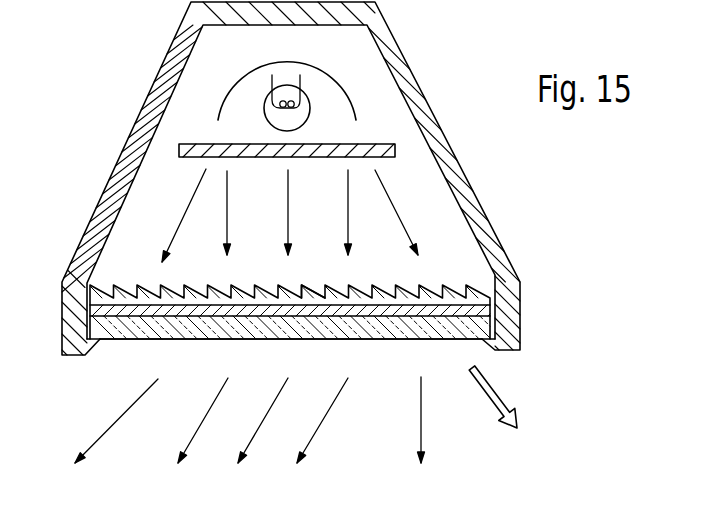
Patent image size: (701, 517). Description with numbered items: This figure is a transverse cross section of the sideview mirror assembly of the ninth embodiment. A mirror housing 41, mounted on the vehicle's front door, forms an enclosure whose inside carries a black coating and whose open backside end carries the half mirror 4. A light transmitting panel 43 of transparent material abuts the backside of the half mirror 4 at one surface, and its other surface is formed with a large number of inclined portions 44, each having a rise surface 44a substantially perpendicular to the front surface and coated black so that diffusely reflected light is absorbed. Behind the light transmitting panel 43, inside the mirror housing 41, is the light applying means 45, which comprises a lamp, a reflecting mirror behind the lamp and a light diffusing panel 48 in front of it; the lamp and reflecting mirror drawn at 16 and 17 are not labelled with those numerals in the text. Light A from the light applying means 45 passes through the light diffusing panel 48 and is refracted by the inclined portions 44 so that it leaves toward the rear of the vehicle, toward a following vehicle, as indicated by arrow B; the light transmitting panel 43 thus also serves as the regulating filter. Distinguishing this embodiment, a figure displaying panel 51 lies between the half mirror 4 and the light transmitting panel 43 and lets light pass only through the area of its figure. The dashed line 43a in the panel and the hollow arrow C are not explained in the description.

The half mirror 4 is at (377, 342).
The lamp 16 is at (311, 112).
The reflector 17 is at (330, 75).
The mirror housing 41 is at (465, 154).
The light transmitting panel 43 is at (472, 297).
The base plate line 43a is at (128, 318).
The inclined portions 44 is at (423, 282).
The rise surface 44a is at (304, 284).
The light applying means 45 is at (370, 88).
The light diffusing panel 48 is at (391, 143).
The figure displaying panel 51 is at (478, 309).
The light A is at (348, 213).
The arrow B is at (323, 422).
The viewing direction C is at (495, 393).